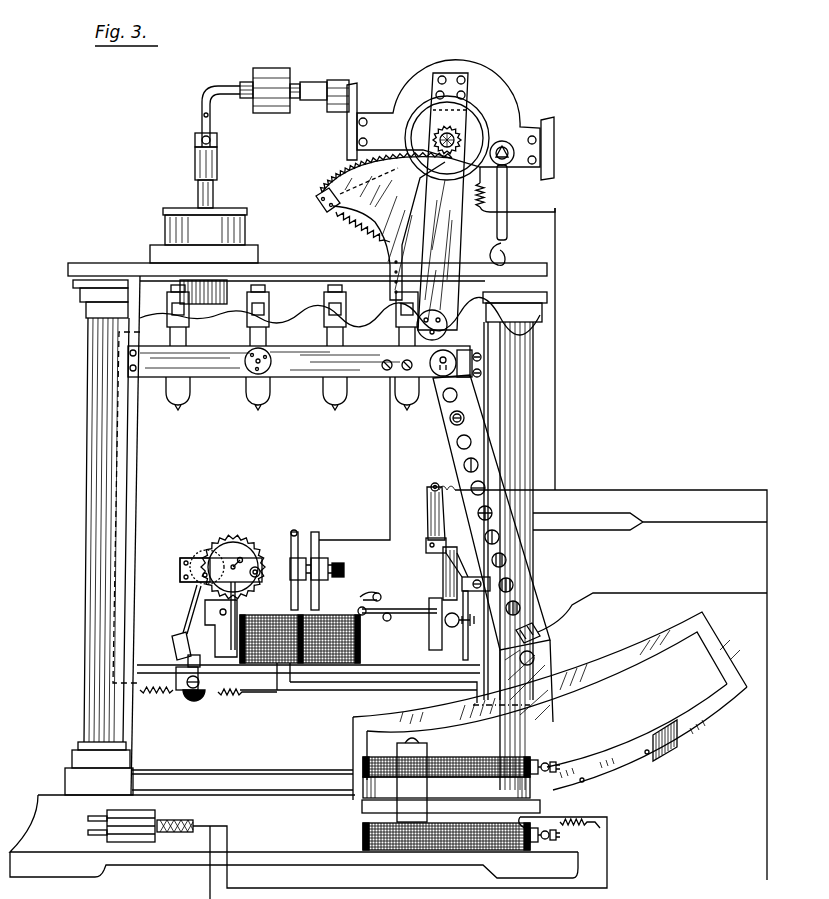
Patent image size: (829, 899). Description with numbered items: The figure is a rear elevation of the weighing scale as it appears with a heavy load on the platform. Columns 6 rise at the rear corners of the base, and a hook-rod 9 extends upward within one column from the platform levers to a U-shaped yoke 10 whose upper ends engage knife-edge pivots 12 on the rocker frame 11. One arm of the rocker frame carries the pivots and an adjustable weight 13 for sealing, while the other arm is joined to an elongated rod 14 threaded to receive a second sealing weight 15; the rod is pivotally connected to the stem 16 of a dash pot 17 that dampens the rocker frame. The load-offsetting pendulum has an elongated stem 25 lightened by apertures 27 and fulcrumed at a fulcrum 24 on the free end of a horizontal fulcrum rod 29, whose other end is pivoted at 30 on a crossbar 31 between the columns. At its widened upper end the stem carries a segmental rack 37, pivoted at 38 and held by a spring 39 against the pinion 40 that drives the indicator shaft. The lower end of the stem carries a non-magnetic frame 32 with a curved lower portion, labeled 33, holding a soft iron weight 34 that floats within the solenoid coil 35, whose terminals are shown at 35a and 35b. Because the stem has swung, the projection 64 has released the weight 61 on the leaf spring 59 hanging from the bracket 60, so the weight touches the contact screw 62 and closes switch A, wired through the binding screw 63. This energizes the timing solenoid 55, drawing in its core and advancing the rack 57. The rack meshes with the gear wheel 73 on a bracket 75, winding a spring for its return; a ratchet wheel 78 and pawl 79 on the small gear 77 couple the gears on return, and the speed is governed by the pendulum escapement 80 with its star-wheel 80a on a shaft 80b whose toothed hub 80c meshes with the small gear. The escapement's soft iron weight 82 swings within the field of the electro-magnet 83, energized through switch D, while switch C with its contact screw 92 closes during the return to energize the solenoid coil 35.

The columns 6 is at (92, 385).
The hook-rod 9 is at (510, 248).
The U-shaped yoke 10 is at (508, 210).
The rocker frame 11 is at (508, 108).
The knife-edge pivots 12 is at (507, 165).
The adjustable weight 13 is at (554, 127).
The elongated rod 14 is at (226, 86).
The second adjustable sealing weight 15 is at (280, 72).
The stem 16 is at (198, 184).
The dash pot 17 is at (165, 225).
The fulcrum 24 is at (436, 378).
The pendulum stem 25 is at (480, 460).
The apertures 27 is at (457, 444).
The fulcrum rod 29 is at (302, 372).
The pivot 30 is at (250, 374).
The crossbar 31 is at (208, 380).
The frame 32 is at (708, 630).
The hatched portion 33 is at (678, 738).
The soft iron weight 34 is at (620, 768).
The solenoid coil 35 is at (362, 836).
The coil terminal 35a is at (553, 752).
The coil terminal 35b is at (562, 835).
The segmental rack 37 is at (333, 184).
The pivotal connection 38 is at (317, 198).
The spring 39 is at (352, 228).
The pinion 40 is at (420, 112).
The solenoid coil 55 is at (350, 646).
The rack 57 is at (190, 605).
The flexible leaf spring 59 is at (440, 590).
The bracket 60 is at (426, 548).
The weight 61 is at (429, 630).
The contact screw 62 is at (472, 620).
The binding screw 63 is at (434, 486).
The projection 64 is at (540, 612).
The gear wheel 73 is at (250, 550).
The bracket 75 is at (250, 580).
The small gear wheel 77 is at (222, 553).
The ratchet wheel 78 is at (258, 566).
The pawl 79 is at (242, 556).
The pendulum escapement mechanism 80 is at (182, 578).
The star-wheel 80a is at (205, 572).
The shaft 80b is at (185, 562).
The elongated toothed hub 80c is at (184, 576).
The weight 82 is at (174, 644).
The electro-magnet 83 is at (200, 698).
The contact screw 92 is at (344, 568).
The switch A is at (432, 605).
The switch C is at (320, 540).
The switch D is at (296, 536).